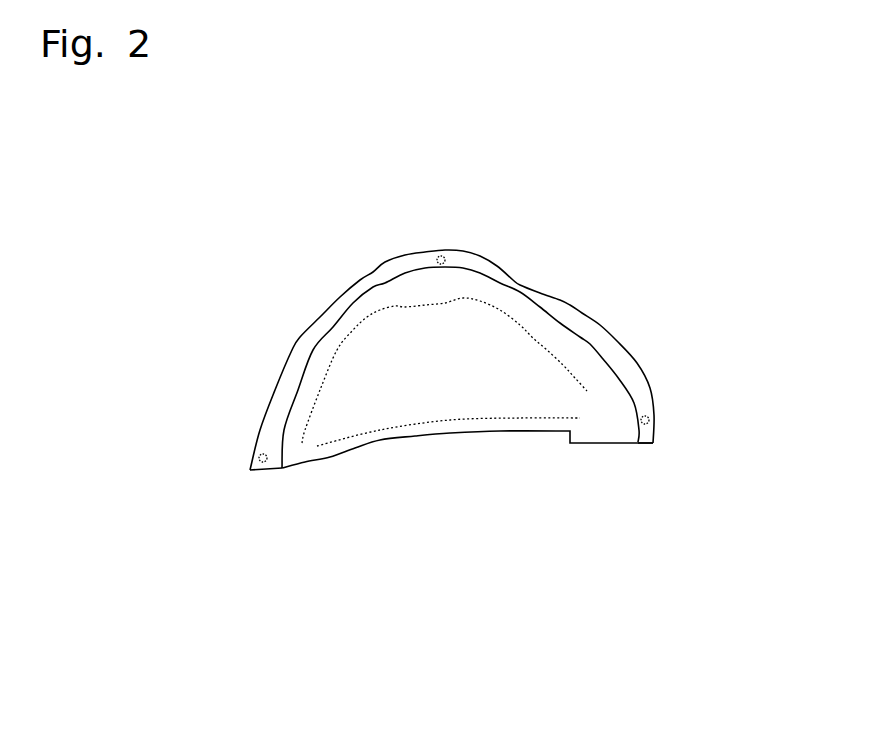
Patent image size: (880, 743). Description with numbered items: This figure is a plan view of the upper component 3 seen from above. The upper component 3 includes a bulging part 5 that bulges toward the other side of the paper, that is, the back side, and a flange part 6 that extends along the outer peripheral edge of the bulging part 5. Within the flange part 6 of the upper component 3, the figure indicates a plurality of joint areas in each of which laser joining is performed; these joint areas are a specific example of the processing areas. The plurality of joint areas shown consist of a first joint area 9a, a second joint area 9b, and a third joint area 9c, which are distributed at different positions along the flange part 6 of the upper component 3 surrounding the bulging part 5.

The upper component 3 is at (627, 177).
The bulging part 5 is at (460, 398).
The flange part 6 is at (602, 336).
The first joint area 9a is at (261, 463).
The second joint area 9b is at (441, 257).
The third joint area 9c is at (647, 424).